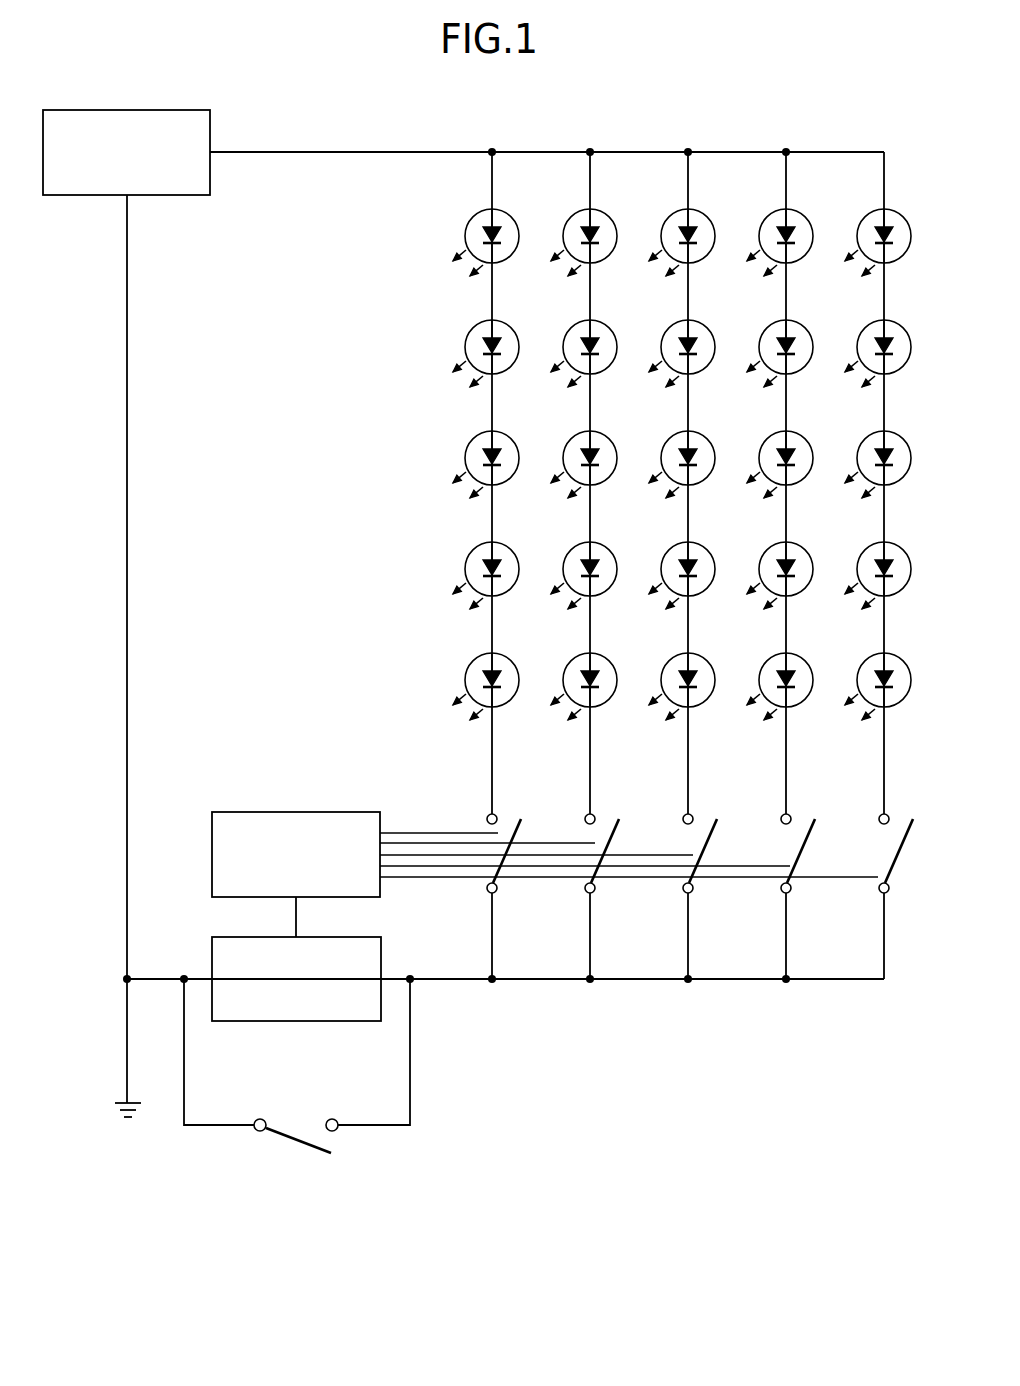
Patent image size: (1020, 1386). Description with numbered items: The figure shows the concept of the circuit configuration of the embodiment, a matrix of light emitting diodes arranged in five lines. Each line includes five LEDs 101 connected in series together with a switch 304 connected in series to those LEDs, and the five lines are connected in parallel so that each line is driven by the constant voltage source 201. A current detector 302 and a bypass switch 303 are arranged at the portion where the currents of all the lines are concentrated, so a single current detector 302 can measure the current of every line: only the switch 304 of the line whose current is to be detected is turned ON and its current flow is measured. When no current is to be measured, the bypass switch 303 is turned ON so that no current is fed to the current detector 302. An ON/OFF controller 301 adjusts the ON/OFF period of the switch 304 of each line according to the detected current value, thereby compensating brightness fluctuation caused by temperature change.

The LED 101 is at (467, 223).
The constant voltage source 201 is at (127, 108).
The ON/OFF controller 301 is at (295, 811).
The current detector 302 is at (297, 1022).
The bypass switch 303 is at (300, 1157).
The switch 304 is at (680, 838).